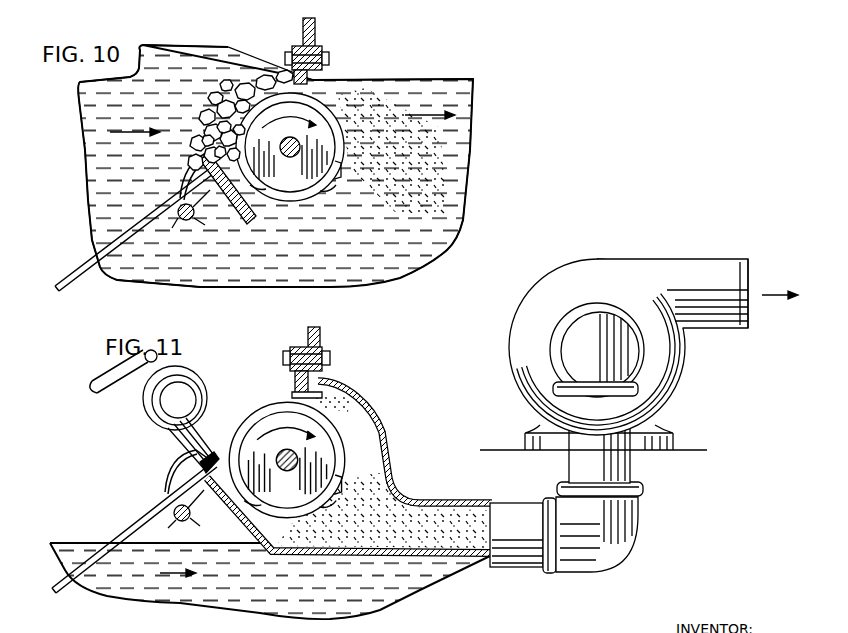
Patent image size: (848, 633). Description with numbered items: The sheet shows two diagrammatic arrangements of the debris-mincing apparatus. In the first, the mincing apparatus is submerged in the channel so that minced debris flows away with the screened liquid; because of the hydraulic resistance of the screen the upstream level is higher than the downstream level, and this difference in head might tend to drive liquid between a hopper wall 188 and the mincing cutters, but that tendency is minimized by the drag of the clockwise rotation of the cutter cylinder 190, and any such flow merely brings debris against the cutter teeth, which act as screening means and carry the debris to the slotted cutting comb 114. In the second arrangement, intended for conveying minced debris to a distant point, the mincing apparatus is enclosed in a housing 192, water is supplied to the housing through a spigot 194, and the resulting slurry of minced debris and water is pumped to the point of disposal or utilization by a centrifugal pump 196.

In FIG. 10, the comb 114 is at (299, 41).
In FIG. 10, the hopper wall 188 is at (231, 203).
In FIG. 10, the cutter cylinder 190 is at (290, 190).
In FIG. 11, the housing 192 is at (378, 405).
In FIG. 11, the spigot 194 is at (198, 393).
In FIG. 11, the centrifugal pump 196 is at (607, 262).